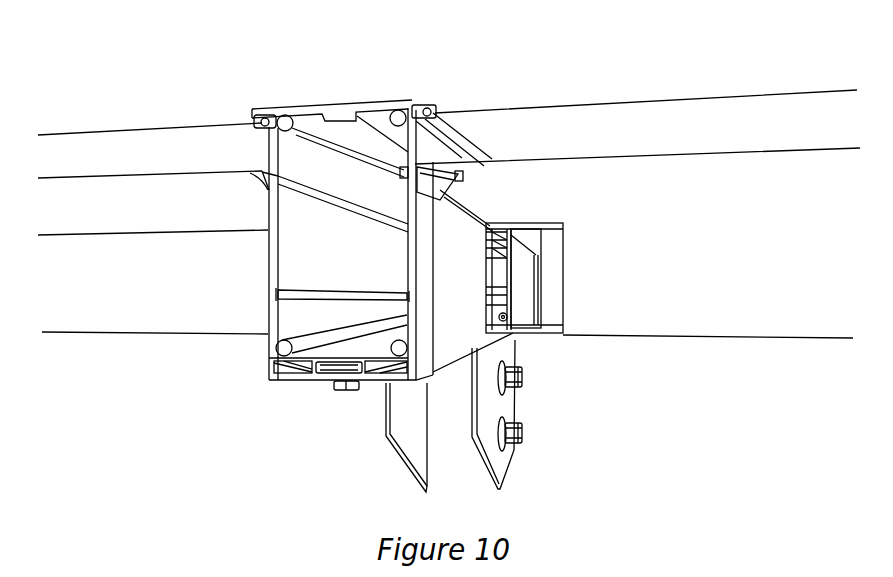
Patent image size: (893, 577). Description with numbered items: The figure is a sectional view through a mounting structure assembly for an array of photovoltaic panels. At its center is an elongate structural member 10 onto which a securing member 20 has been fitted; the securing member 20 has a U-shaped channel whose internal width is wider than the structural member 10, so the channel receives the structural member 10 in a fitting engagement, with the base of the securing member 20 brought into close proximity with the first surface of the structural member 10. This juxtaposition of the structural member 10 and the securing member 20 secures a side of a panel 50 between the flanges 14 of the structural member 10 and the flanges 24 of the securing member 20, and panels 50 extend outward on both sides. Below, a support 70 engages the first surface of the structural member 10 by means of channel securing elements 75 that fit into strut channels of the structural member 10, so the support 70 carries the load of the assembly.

The structural member 10 is at (308, 230).
The flanges 14 is at (423, 103).
The securing member 20 is at (421, 228).
The flanges 24 is at (275, 176).
The panel 50 is at (127, 266).
The support 70 is at (463, 408).
The channel securing elements 75 is at (338, 389).